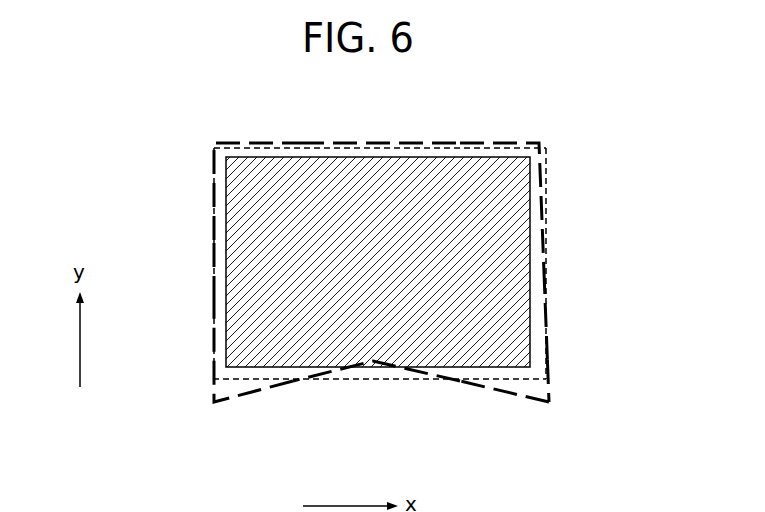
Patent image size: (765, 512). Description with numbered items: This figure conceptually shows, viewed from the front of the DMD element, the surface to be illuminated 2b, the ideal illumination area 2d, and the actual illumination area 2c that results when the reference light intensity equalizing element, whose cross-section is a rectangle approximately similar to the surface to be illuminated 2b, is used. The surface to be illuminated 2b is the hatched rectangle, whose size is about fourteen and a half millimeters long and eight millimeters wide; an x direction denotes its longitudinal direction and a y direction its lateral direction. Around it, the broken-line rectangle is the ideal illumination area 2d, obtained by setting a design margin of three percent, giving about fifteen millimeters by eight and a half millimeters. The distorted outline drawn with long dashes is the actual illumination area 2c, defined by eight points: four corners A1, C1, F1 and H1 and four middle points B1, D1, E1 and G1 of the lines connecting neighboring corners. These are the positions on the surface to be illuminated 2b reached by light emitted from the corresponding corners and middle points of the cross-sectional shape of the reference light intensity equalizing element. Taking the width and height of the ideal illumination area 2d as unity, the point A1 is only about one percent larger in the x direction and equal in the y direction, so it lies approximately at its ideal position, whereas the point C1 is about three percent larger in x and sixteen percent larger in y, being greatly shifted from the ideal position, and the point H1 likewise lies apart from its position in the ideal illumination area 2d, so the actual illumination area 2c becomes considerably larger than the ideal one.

The point A1 is at (214, 143).
The point B1 is at (214, 270).
The point C1 is at (214, 402).
The point D1 is at (380, 140).
The point E1 is at (353, 370).
The point F1 is at (537, 143).
The point G1 is at (544, 272).
The point H1 is at (552, 404).
The surface to be illuminated 2b is at (292, 152).
The actual illumination area 2c is at (519, 396).
The ideal illumination area 2d is at (549, 162).